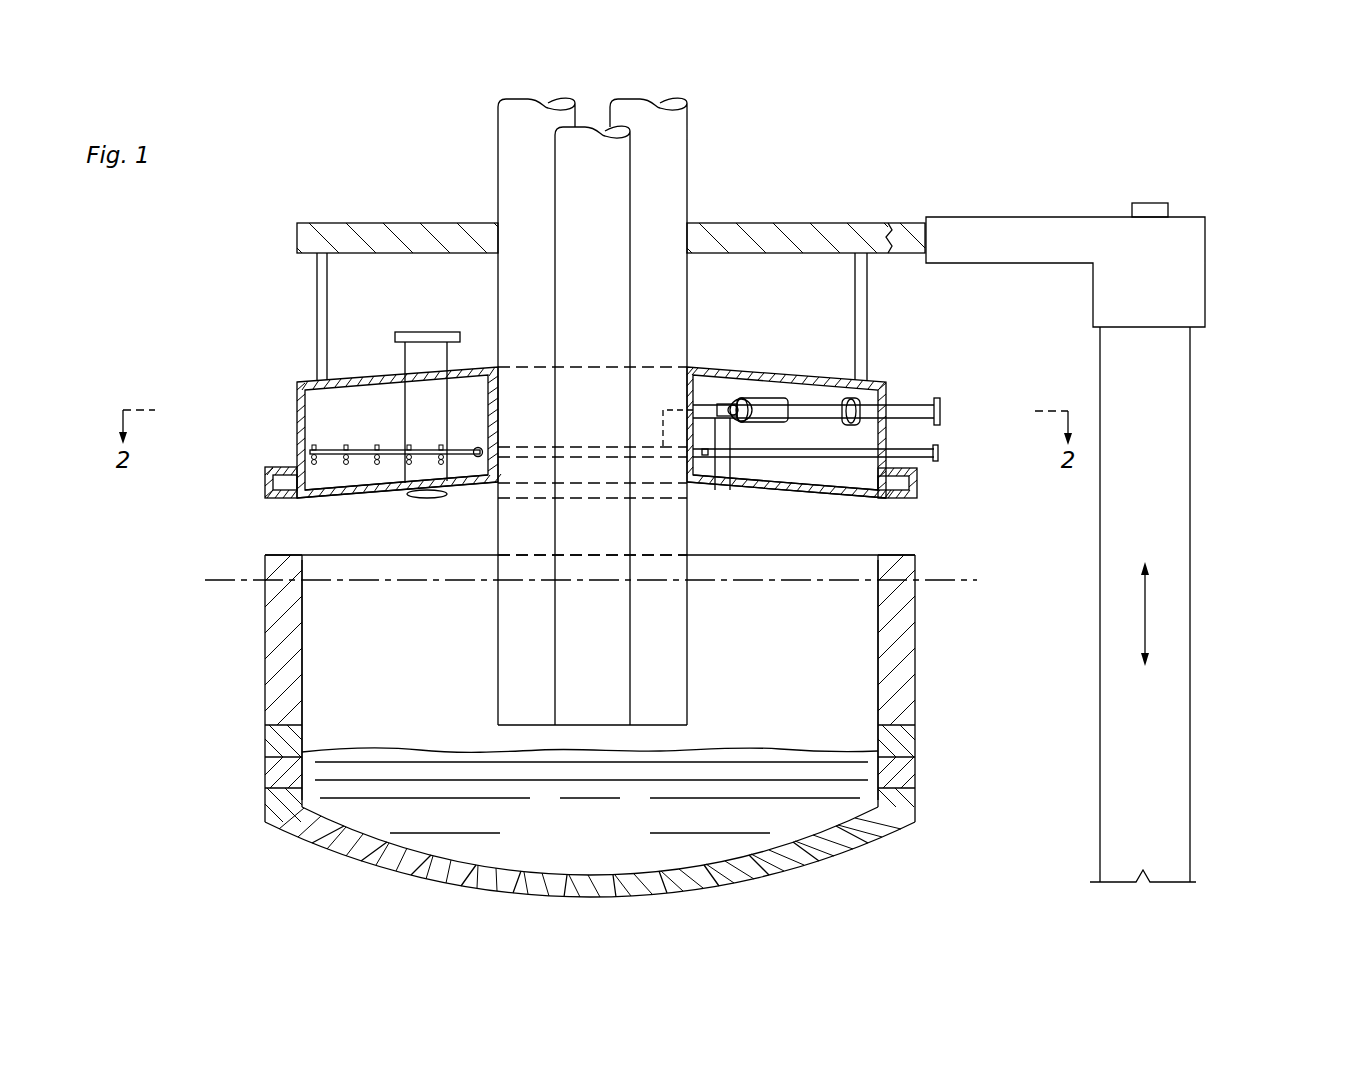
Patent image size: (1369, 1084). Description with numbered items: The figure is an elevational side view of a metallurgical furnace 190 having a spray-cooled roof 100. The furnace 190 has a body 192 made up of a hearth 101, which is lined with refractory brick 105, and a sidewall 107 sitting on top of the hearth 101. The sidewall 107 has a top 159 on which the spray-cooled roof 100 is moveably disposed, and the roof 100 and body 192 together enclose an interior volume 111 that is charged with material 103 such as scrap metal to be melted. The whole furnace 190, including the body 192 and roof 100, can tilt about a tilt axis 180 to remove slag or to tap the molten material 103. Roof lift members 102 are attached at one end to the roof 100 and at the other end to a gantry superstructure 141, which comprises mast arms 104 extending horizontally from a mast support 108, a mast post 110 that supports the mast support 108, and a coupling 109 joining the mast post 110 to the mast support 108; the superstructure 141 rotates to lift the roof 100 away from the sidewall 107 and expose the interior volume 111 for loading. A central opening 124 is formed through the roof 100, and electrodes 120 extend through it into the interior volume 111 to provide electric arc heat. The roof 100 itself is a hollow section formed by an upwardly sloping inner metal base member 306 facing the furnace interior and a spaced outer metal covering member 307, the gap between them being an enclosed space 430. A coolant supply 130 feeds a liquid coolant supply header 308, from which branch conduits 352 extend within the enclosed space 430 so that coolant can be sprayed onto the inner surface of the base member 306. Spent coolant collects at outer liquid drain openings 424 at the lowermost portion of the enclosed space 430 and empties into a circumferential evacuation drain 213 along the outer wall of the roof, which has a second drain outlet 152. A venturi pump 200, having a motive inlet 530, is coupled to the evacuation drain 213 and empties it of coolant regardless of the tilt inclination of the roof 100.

The spray-cooled roof 100 is at (251, 401).
The hearth 101 is at (265, 742).
The roof lift members 102 is at (317, 320).
The material 103 is at (570, 842).
The mast arms 104 is at (783, 233).
The refractory brick 105 is at (265, 800).
The sidewall 107 is at (265, 655).
The mast support 108 is at (988, 217).
The coupling 109 is at (1150, 203).
The mast post 110 is at (1191, 724).
The interior volume 111 is at (755, 682).
The electrodes 120 is at (498, 141).
The central opening 124 is at (685, 396).
The coolant supply 130 is at (946, 453).
The gantry superstructure 141 is at (1238, 414).
The second drain outlet 152 is at (946, 413).
The top 159 is at (275, 554).
The tilt axis 180 is at (948, 585).
The metallurgical furnace 190 is at (205, 619).
The body 192 is at (254, 695).
The venturi pump 200 is at (771, 392).
The evacuation drain 213 is at (275, 480).
The inner metal base member 306 is at (383, 490).
The outer metal covering member 307 is at (373, 367).
The liquid coolant supply header 308 is at (475, 462).
The branch conduits 352 is at (357, 447).
The outer liquid drain openings 424 is at (302, 498).
The enclosed space 430 is at (823, 483).
The motive inlet 530 is at (742, 420).